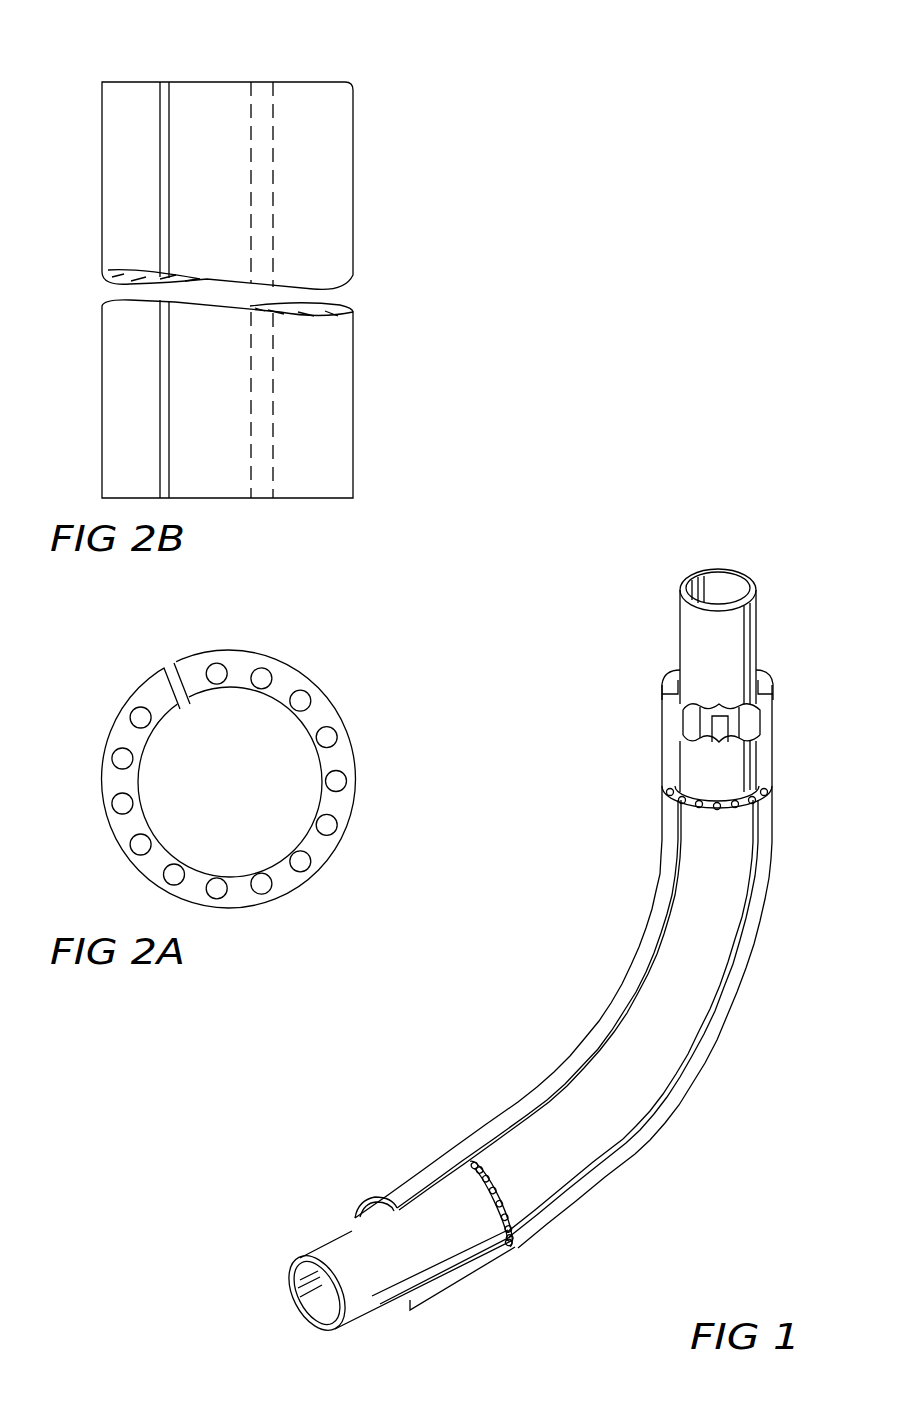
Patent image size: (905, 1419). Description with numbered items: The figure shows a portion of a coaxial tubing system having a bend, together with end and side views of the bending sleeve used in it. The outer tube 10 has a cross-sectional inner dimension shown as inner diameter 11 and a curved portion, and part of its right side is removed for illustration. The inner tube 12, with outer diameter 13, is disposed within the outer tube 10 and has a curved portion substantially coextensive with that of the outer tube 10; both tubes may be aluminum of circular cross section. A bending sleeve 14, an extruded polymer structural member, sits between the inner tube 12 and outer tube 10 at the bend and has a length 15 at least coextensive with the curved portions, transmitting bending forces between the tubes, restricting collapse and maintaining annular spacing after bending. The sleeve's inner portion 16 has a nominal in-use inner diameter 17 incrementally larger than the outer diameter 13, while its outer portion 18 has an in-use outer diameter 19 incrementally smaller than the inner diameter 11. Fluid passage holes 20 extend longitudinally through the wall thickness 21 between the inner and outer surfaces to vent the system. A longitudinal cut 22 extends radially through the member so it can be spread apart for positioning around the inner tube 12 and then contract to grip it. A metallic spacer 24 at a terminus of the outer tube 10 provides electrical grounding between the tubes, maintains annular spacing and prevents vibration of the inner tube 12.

In FIG. 1, the outer tube 10 is at (407, 1180).
In FIG. 1, the inner diameter 11 is at (215, 1289).
In FIG. 1, the inner tube 12 is at (372, 1310).
In FIG. 1, the outer diameter 13 is at (680, 520).
In FIG. 2B, the bending sleeve 14 is at (86, 238).
In FIG. 2A, the bending sleeve 14 is at (377, 892).
In FIG. 1, the bending sleeve 14 is at (563, 966).
In FIG. 2B, the length 15 is at (365, 82).
In FIG. 1, the length 15 is at (778, 778).
In FIG. 2A, the inner portion 16 is at (277, 858).
In FIG. 2A, the inner diameter 17 is at (306, 798).
In FIG. 2A, the outer portion 18 is at (290, 668).
In FIG. 2B, the outer diameter 19 is at (353, 40).
In FIG. 2A, the outer diameter 19 is at (90, 781).
In FIG. 2B, the fluid passage holes 20 is at (273, 384).
In FIG. 2A, the fluid passage holes 20 is at (131, 718).
In FIG. 2A, the thickness 21 is at (340, 698).
In FIG. 2B, the longitudinal cut 22 is at (160, 428).
In FIG. 2A, the longitudinal cut 22 is at (165, 671).
In FIG. 1, the longitudinal cut 22 is at (745, 946).
In FIG. 1, the metallic spacer 24 is at (773, 697).